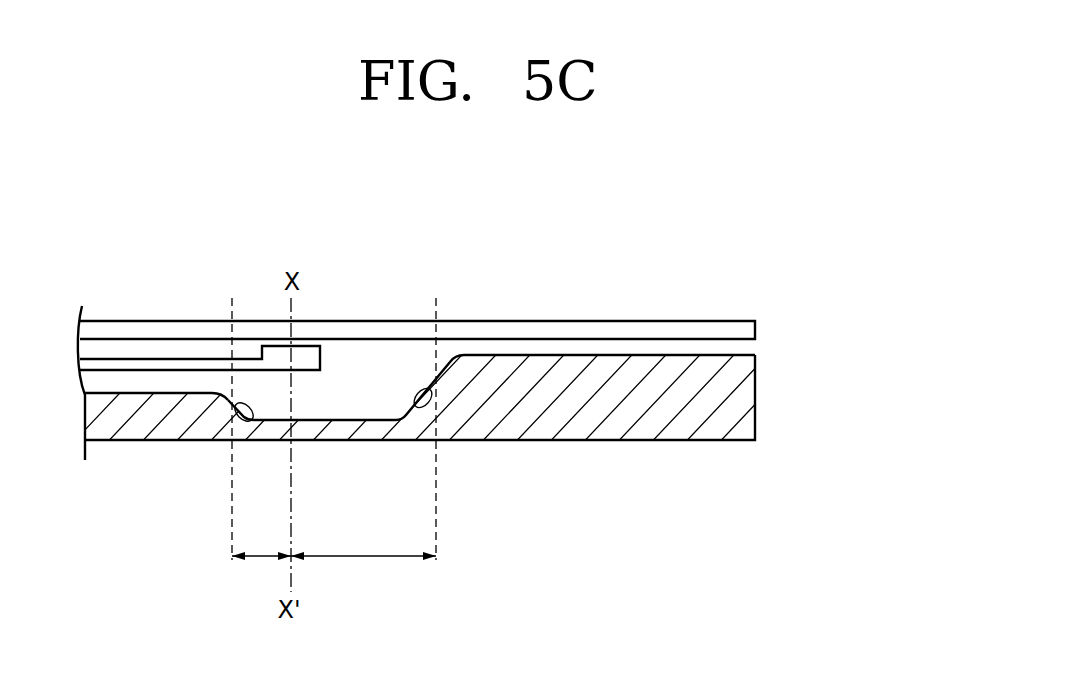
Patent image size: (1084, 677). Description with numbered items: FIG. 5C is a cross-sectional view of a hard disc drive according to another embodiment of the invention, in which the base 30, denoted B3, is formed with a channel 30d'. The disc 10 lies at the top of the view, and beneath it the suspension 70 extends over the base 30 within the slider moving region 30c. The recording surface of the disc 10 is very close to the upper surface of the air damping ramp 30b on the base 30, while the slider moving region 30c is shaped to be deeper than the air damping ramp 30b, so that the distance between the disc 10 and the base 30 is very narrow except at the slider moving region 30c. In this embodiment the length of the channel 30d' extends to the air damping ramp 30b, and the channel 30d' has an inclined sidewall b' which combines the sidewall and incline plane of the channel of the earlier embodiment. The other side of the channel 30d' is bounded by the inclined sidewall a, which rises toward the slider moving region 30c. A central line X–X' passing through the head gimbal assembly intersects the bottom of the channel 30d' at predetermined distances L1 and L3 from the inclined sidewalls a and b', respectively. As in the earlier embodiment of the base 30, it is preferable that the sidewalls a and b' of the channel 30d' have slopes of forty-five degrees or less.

The disc 10 is at (663, 334).
The suspension 70 is at (175, 359).
The base 30 is at (479, 396).
The slider moving region 30c is at (154, 393).
The channel 30d' is at (346, 325).
The air damping ramp 30b is at (578, 355).
The inclined sidewall a is at (244, 420).
The inclined sidewall b' is at (452, 459).
The predetermined distance L1 is at (261, 540).
The predetermined distance L3 is at (363, 540).